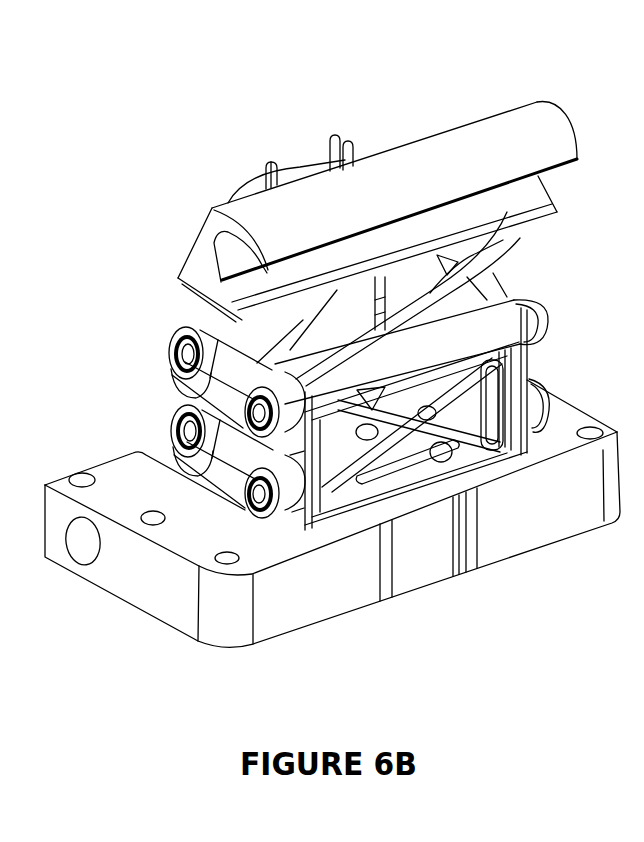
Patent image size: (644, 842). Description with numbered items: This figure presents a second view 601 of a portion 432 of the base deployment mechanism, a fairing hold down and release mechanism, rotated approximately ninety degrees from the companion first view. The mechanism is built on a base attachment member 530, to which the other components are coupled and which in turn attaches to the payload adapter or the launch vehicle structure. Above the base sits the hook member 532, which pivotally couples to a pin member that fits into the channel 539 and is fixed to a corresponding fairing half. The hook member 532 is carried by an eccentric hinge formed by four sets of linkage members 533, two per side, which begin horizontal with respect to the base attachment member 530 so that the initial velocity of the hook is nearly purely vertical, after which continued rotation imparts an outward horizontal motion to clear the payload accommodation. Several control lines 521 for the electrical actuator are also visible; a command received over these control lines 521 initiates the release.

The second view 601 is at (122, 107).
The portion 432 is at (205, 187).
The control lines 521 is at (323, 142).
The hook member 532 is at (474, 147).
The channel 539 is at (553, 182).
The linkage members 533 is at (199, 404).
The base attachment member 530 is at (140, 583).